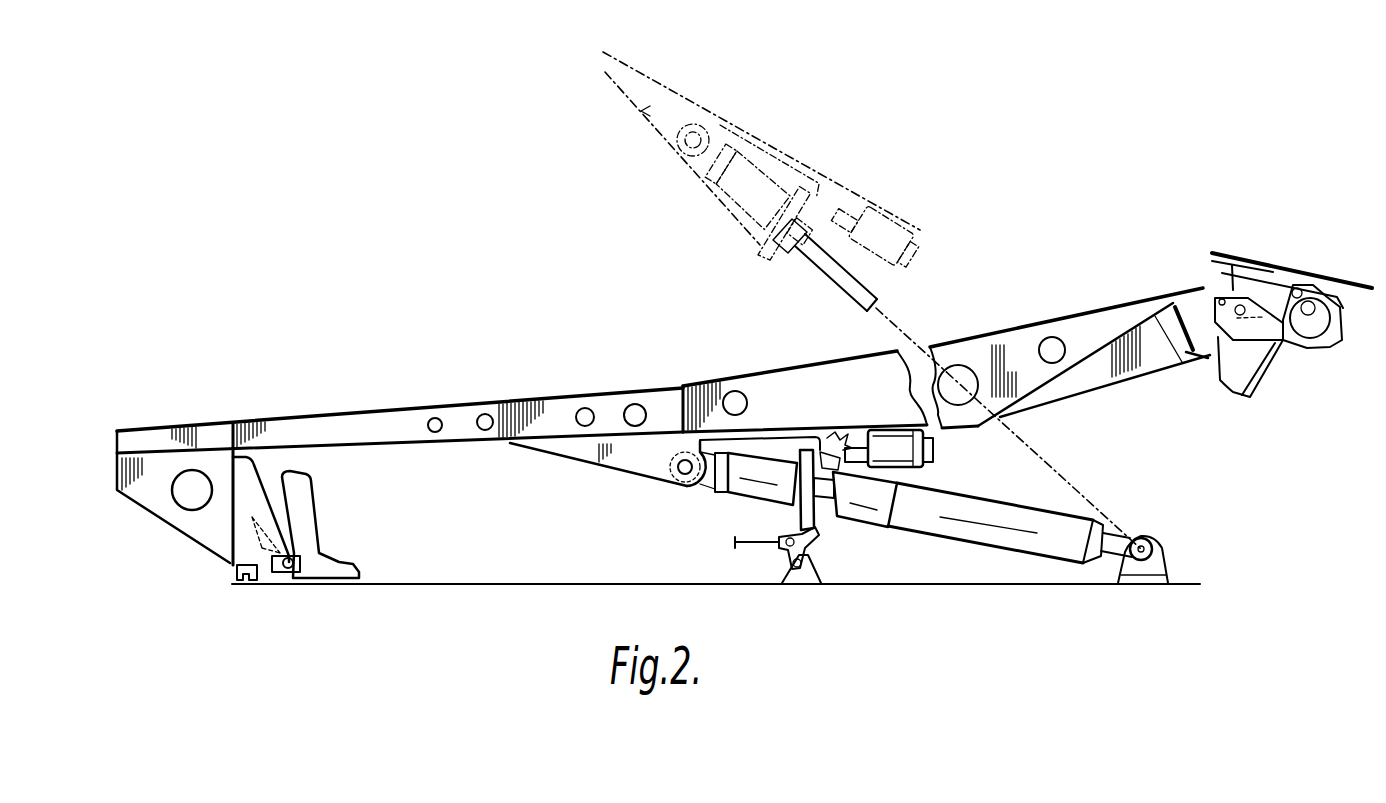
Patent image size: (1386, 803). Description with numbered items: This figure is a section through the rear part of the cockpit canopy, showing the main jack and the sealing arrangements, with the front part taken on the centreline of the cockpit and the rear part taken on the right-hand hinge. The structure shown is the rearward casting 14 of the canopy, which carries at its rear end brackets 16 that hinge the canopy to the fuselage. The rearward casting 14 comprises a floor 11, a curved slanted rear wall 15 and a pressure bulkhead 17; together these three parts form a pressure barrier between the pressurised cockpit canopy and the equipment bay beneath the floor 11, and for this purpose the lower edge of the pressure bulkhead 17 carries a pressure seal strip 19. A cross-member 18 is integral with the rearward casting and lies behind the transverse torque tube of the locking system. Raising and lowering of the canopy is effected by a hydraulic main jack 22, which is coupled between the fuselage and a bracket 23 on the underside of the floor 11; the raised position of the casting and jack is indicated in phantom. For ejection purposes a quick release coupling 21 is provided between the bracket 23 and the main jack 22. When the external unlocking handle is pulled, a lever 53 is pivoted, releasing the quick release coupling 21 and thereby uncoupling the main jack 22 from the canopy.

The floor 11 is at (770, 428).
The rearward casting 14 is at (538, 389).
The curved slanted rear wall 15 is at (1097, 360).
The bracket 16 is at (1207, 358).
The pressure bulkhead 17 is at (228, 463).
The cross-member 18 is at (142, 473).
The pressure seal strip 19 is at (236, 568).
The quick release coupling 21 is at (737, 503).
The hydraulic main jack 22 is at (980, 507).
The bracket 23 is at (587, 453).
The lever 53 is at (826, 548).